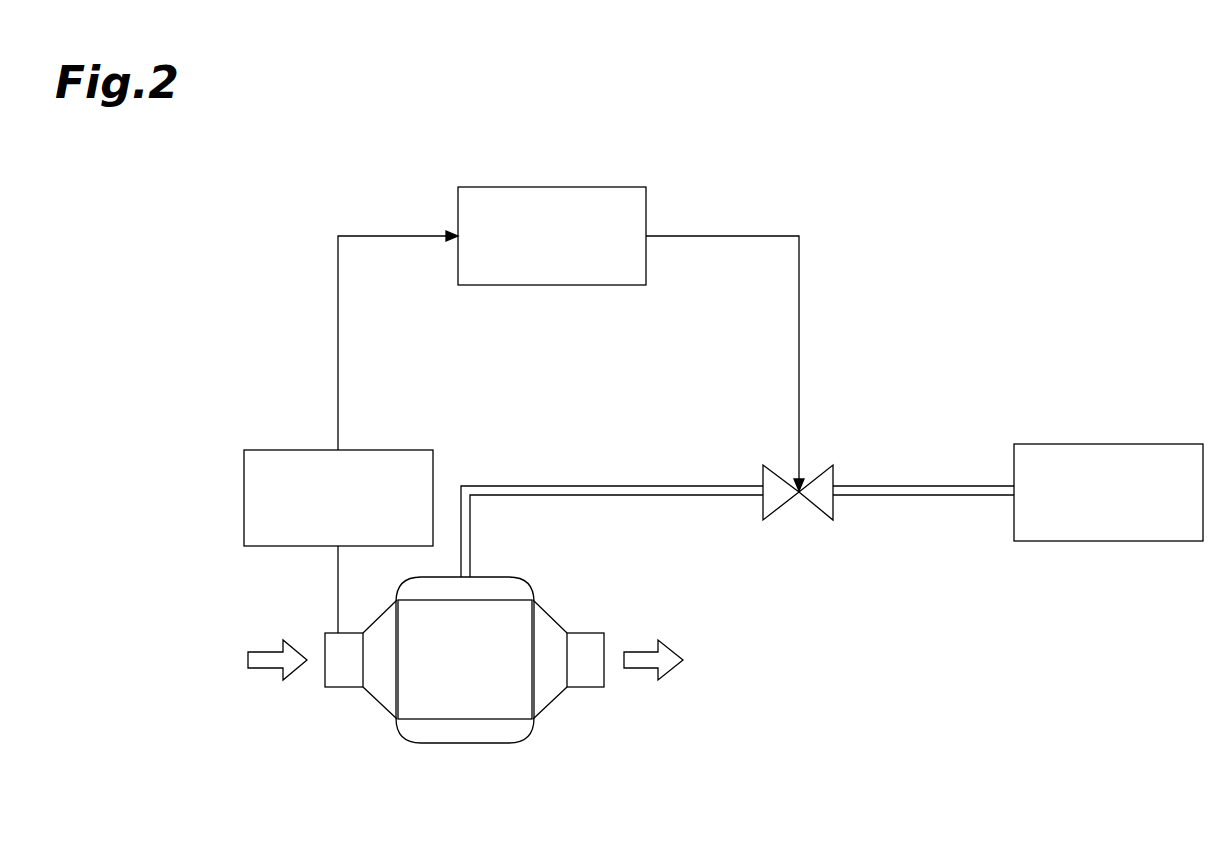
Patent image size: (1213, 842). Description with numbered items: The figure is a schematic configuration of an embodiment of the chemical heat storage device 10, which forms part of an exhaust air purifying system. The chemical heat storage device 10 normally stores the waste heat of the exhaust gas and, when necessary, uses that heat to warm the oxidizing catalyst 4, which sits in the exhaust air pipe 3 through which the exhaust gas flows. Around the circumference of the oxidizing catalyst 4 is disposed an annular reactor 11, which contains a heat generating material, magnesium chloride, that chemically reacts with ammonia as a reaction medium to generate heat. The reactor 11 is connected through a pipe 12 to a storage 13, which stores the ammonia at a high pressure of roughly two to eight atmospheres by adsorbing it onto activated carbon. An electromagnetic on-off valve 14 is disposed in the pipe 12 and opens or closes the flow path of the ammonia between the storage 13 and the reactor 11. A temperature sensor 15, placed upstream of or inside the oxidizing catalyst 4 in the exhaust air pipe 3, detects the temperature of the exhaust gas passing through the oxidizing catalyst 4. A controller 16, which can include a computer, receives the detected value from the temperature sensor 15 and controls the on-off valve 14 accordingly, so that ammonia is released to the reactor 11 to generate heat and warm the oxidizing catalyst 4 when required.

The chemical heat storage device 10 is at (733, 121).
The controller 16 is at (596, 187).
The temperature sensor 15 is at (389, 450).
The storage 13 is at (1150, 444).
The pipe 12 is at (653, 485).
The electromagnetic on-off valve 14 is at (780, 510).
The reactor 11 is at (493, 733).
The oxidizing catalyst 4 is at (447, 698).
The exhaust air pipe 3 is at (586, 673).